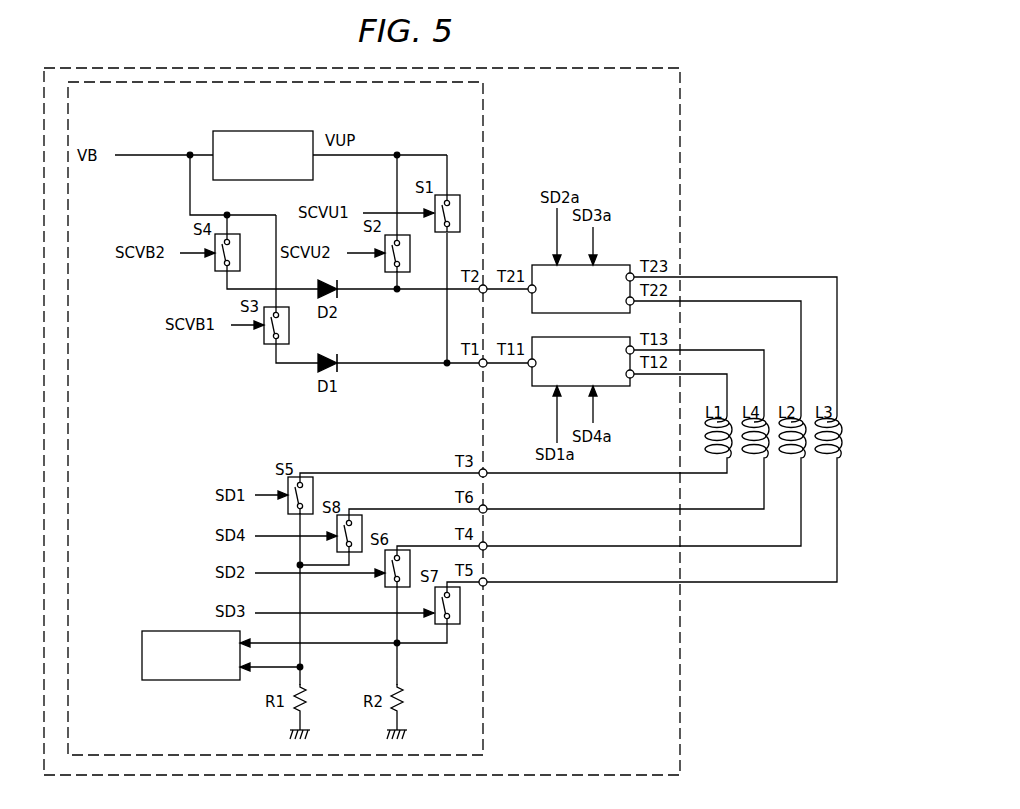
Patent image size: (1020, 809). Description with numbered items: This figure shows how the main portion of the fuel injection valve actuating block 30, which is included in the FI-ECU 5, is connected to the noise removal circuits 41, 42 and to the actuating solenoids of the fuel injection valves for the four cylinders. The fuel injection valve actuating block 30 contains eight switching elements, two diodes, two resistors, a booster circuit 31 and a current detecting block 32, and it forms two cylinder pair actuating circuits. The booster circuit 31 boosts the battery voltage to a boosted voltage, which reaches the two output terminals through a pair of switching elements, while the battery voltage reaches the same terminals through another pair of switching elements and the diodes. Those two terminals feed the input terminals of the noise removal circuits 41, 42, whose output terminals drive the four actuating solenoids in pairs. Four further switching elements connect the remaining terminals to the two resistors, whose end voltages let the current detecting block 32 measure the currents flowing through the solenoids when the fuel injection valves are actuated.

The FI-ECU 5 is at (680, 125).
The fuel injection valve actuating block 30 is at (483, 125).
The booster circuit 31 is at (240, 131).
The current detecting block 32 is at (142, 652).
The noise removal circuit 41 is at (613, 386).
The noise removal circuit 42 is at (605, 265).